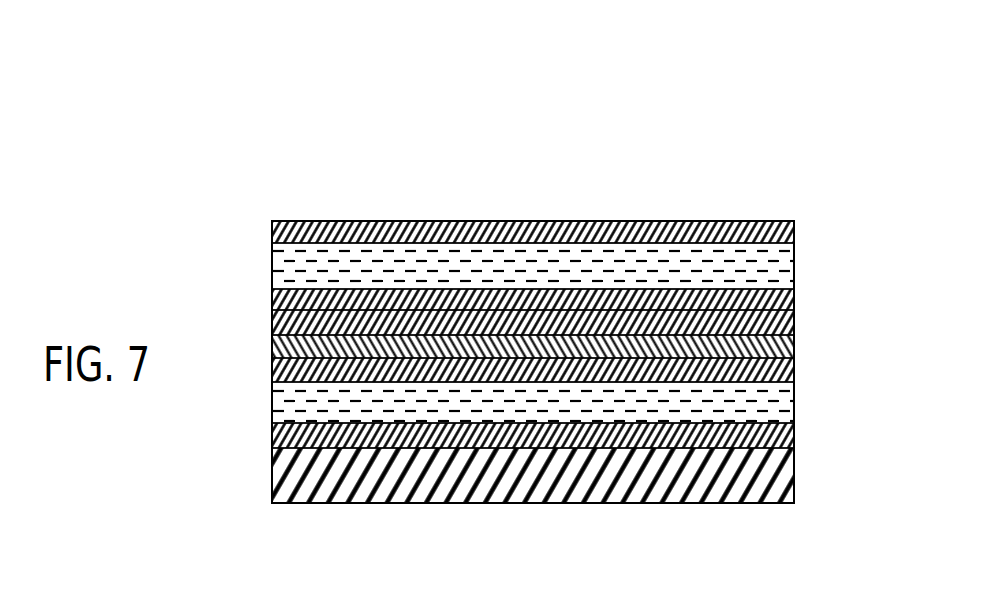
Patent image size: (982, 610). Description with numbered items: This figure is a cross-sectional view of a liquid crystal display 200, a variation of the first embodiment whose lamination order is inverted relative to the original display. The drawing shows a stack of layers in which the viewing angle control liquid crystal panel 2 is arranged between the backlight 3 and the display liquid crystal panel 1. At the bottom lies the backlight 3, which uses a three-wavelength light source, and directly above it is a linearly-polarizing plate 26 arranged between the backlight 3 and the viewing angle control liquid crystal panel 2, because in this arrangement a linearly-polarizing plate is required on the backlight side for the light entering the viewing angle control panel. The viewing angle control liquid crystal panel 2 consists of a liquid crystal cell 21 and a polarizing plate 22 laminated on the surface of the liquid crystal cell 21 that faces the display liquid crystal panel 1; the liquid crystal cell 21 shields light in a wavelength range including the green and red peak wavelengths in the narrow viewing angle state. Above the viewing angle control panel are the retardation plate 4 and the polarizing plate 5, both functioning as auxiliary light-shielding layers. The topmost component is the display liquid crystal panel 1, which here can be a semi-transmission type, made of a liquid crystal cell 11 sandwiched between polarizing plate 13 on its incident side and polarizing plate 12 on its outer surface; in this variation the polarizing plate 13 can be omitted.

The liquid crystal display 200 is at (885, 44).
The display liquid crystal panel 1 is at (913, 180).
The polarizing plate 12 is at (794, 228).
The liquid crystal cell 11 is at (794, 262).
The polarizing plate 13 is at (794, 292).
The polarizing plate 5 is at (794, 322).
The retardation plate 4 is at (794, 340).
The viewing angle control liquid crystal panel 2 is at (913, 353).
The polarizing plate 22 is at (794, 363).
The liquid crystal cell 21 is at (794, 400).
The linearly-polarizing plate 26 is at (794, 430).
The backlight 3 is at (794, 475).